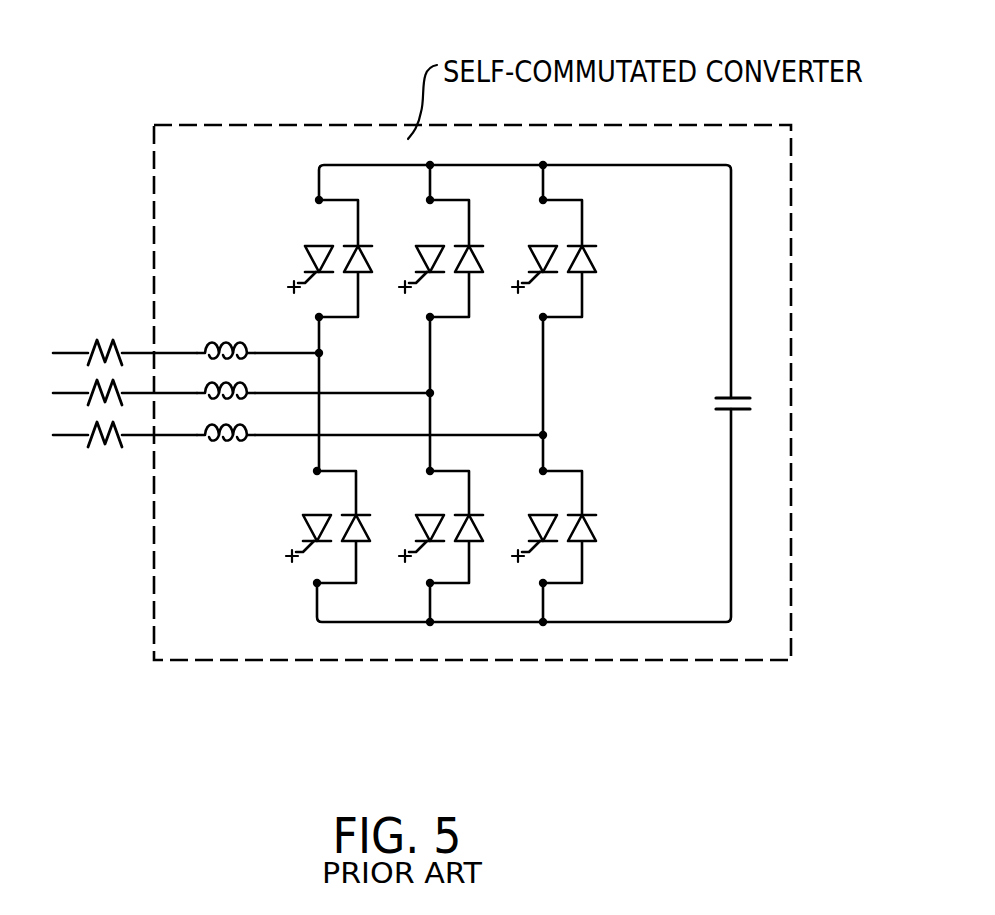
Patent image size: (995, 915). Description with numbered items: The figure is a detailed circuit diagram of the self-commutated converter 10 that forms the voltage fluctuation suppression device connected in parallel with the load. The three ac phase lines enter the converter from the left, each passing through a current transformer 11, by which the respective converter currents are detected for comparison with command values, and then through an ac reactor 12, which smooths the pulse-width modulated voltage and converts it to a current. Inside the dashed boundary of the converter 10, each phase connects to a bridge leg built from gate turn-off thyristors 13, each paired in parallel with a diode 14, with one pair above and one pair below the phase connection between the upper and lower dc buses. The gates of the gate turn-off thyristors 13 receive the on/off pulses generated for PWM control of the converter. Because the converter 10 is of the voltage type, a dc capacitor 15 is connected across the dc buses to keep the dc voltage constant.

The self-commutated converter 10 is at (237, 661).
The current transformer 11 is at (103, 333).
The ac reactor 12 is at (222, 335).
The gate turn-off thyristor 13 is at (298, 266).
The diode 14 is at (380, 258).
The dc capacitor 15 is at (712, 398).